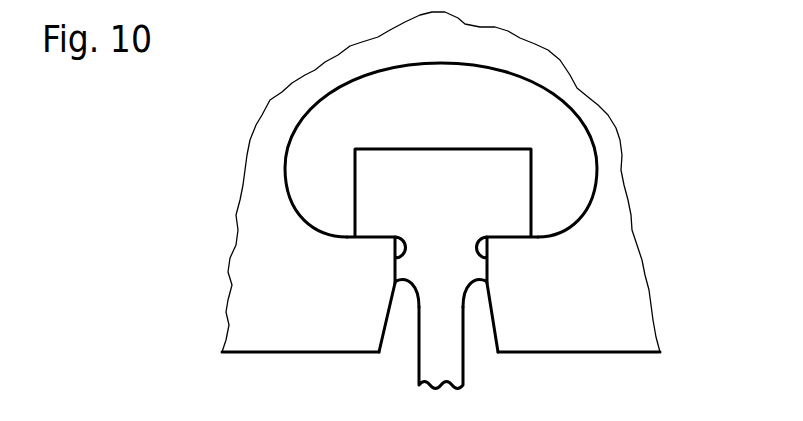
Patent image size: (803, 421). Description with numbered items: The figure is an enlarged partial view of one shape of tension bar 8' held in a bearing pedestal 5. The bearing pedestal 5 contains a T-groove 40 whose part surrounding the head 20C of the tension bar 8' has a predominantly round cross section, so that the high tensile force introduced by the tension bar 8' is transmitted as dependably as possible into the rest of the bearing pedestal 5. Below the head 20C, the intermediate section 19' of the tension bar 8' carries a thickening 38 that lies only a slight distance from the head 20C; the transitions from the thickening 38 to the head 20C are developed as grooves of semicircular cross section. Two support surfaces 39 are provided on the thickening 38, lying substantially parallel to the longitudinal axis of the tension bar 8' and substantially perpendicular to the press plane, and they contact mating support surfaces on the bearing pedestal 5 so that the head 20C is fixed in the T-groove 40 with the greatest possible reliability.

The bearing pedestal 5 is at (238, 291).
The T-groove 40 is at (562, 132).
The head 20C is at (440, 178).
The support surfaces 39 is at (385, 269).
The thickening 38 is at (413, 267).
The intermediate section 19' is at (505, 316).
The tension bar 8' is at (406, 348).